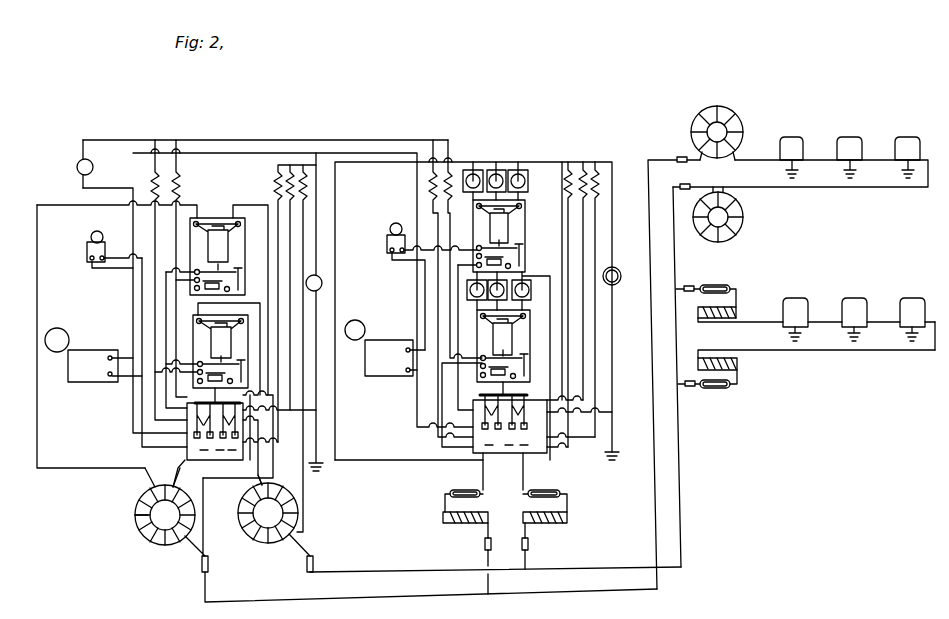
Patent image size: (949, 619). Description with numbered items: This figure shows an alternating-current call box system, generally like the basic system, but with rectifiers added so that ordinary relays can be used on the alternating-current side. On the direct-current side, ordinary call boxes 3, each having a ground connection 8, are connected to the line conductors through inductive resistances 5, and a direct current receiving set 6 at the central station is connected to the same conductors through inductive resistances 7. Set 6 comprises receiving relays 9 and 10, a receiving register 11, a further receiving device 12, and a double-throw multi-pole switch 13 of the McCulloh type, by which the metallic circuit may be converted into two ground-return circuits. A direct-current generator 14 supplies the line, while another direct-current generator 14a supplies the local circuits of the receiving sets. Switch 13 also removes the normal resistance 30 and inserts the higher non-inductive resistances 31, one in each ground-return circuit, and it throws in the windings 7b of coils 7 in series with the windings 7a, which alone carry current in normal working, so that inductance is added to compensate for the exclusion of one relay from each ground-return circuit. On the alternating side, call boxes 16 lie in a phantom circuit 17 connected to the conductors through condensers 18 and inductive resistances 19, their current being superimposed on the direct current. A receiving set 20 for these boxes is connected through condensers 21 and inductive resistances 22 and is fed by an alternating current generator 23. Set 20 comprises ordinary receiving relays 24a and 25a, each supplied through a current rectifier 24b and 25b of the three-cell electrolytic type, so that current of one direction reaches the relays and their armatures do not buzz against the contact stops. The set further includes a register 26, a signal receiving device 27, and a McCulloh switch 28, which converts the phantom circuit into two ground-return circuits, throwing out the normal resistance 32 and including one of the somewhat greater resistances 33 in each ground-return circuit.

The call box 3 is at (803, 142).
The inductive resistance 5 is at (717, 174).
The direct current receiving set 6 is at (91, 336).
The inductive resistance 7 is at (408, 535).
The winding 7a is at (244, 528).
The winding 7b is at (180, 492).
The ground connection 8 is at (868, 172).
The receiving relay 9 is at (211, 338).
The receiving relay 10 is at (222, 248).
The receiving register 11 is at (84, 352).
The receiving device 12 is at (86, 258).
The double-throw multi-pole switch 13 is at (212, 462).
The direct-current generator 14 is at (317, 275).
The direct-current generator 14a is at (77, 168).
The call box 16 is at (910, 300).
The phantom circuit 17 is at (892, 349).
The condenser 18 is at (712, 337).
The inductive resistance 19 is at (739, 364).
The receiving set 20 is at (409, 372).
The condenser 21 is at (553, 490).
The inductive resistance 22 is at (484, 544).
The alternating current generator 23 is at (615, 268).
The receiving relay 24a is at (492, 352).
The current rectifier 24b is at (535, 300).
The receiving relay 25a is at (515, 222).
The current rectifier 25b is at (533, 180).
The register 26 is at (385, 348).
The signal receiving device 27 is at (386, 242).
The double-throw multi-pole McCulloh switch 28 is at (498, 455).
The resistance 30 is at (276, 178).
The non-inductive resistance 31 is at (303, 170).
The resistance 32 is at (569, 165).
The resistance 33 is at (585, 168).